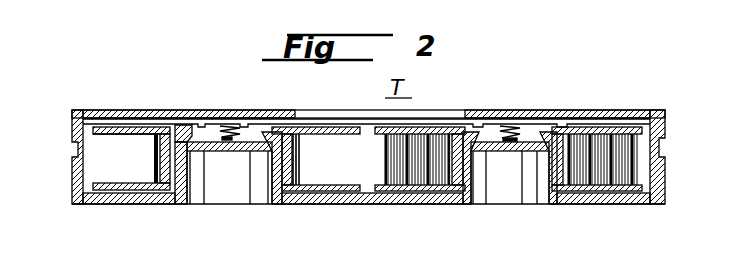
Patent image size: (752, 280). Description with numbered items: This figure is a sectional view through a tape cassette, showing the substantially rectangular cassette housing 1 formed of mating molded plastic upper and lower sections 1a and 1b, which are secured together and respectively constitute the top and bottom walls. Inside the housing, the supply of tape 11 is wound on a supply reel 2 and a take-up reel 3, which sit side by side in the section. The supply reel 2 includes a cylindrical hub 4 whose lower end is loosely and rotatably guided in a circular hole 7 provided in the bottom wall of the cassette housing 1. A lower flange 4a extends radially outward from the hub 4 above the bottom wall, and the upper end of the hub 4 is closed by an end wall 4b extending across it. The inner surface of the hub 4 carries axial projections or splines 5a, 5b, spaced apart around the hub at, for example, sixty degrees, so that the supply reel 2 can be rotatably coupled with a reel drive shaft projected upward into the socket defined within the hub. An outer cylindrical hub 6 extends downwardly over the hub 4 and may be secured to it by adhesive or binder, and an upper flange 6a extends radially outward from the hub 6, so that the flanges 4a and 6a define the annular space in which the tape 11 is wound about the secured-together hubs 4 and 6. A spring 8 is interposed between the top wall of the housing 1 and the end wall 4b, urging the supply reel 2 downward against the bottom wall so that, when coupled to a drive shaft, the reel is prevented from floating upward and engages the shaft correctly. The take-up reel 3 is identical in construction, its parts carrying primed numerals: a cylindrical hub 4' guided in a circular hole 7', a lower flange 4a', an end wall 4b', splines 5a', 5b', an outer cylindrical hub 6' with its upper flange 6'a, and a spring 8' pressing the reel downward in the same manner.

The cassette housing 1 is at (70, 126).
The upper section 1a is at (118, 110).
The lower section 1b is at (348, 204).
The supply reel 2 is at (476, 124).
The take-up reel 3 is at (181, 125).
The cylindrical hub 4 is at (451, 186).
The cylindrical hub 4' is at (167, 191).
The lower flange 4a is at (420, 214).
The lower flange 4a' is at (123, 185).
The end wall 4b is at (510, 192).
The end wall 4b' is at (229, 192).
The axial projection or spline 5a is at (469, 203).
The axial projection or spline 5a' is at (207, 204).
The axial projection or spline 5b is at (538, 203).
The axial projection or spline 5b' is at (272, 204).
The outer cylindrical hub 6 is at (596, 135).
The outer cylindrical hub 6' is at (130, 106).
The upper flange 6a is at (431, 127).
The upper flange 6'a is at (316, 135).
The circular hole 7 is at (563, 187).
The circular hole 7' is at (163, 193).
The spring 8 is at (518, 110).
The spring 8' is at (223, 108).
The tape 11 is at (305, 160).